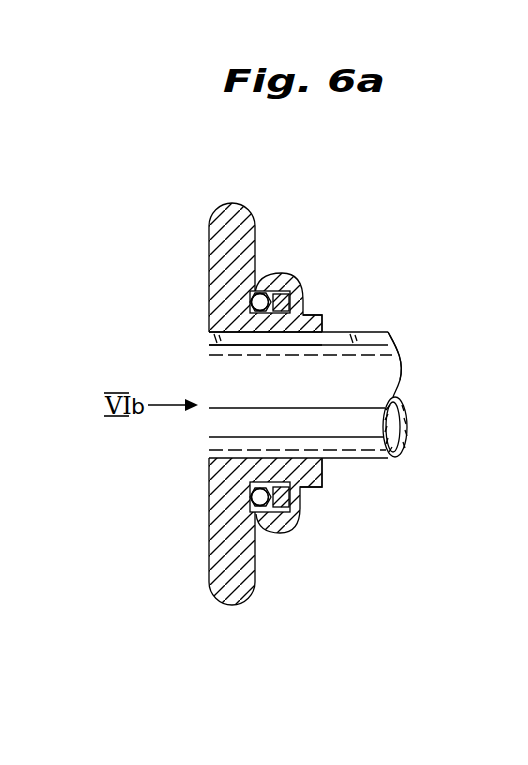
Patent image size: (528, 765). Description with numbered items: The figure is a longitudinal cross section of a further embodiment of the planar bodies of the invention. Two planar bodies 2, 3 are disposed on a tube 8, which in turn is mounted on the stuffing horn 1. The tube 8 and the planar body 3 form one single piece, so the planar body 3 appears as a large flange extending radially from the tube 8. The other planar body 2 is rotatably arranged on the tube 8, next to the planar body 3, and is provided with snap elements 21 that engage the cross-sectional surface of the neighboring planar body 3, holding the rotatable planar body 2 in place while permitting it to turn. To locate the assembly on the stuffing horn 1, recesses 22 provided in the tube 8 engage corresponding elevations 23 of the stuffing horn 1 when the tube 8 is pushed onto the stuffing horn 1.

The stuffing horn 1 is at (383, 378).
The planar body 2 is at (301, 524).
The planar body 3 is at (243, 596).
The tube 8 is at (322, 314).
The snap elements 21 is at (262, 282).
The recesses 22 is at (246, 336).
The elevations 23 is at (388, 331).